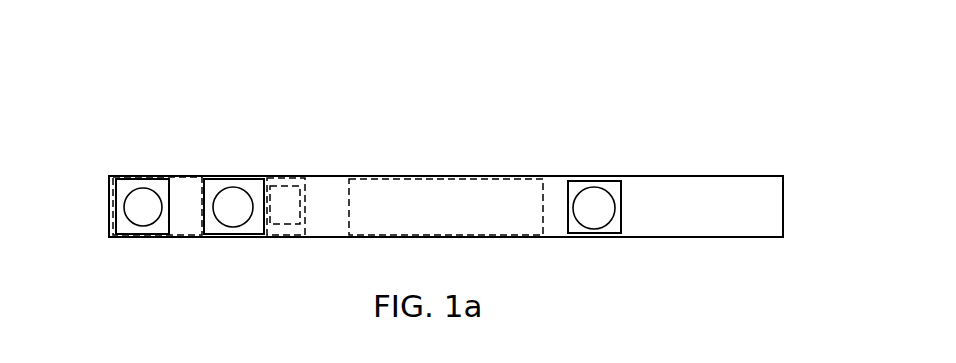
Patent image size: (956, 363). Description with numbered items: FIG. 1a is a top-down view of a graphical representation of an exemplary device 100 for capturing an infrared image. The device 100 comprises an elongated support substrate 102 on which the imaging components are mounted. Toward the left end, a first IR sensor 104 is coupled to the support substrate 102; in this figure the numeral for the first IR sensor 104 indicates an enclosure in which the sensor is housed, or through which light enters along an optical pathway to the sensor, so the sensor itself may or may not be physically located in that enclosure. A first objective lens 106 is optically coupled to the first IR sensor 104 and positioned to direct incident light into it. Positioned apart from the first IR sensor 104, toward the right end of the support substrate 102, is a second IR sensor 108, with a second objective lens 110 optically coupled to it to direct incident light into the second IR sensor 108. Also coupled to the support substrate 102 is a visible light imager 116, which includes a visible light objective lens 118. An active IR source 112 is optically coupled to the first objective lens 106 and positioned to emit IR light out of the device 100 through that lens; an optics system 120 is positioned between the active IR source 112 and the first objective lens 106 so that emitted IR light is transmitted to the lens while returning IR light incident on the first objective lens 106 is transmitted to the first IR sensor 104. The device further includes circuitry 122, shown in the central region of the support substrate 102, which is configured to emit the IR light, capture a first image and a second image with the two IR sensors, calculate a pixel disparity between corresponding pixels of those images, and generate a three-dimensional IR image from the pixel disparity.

The device 100 is at (437, 107).
The support substrate 102 is at (747, 176).
The first IR sensor 104 is at (155, 180).
The first objective lens 106 is at (122, 205).
The second IR sensor 108 is at (598, 182).
The second objective lens 110 is at (603, 228).
The active IR source 112 is at (293, 224).
The visible light imager 116 is at (248, 175).
The visible light objective lens 118 is at (230, 188).
The optics system 120 is at (290, 236).
The circuitry 122 is at (548, 180).